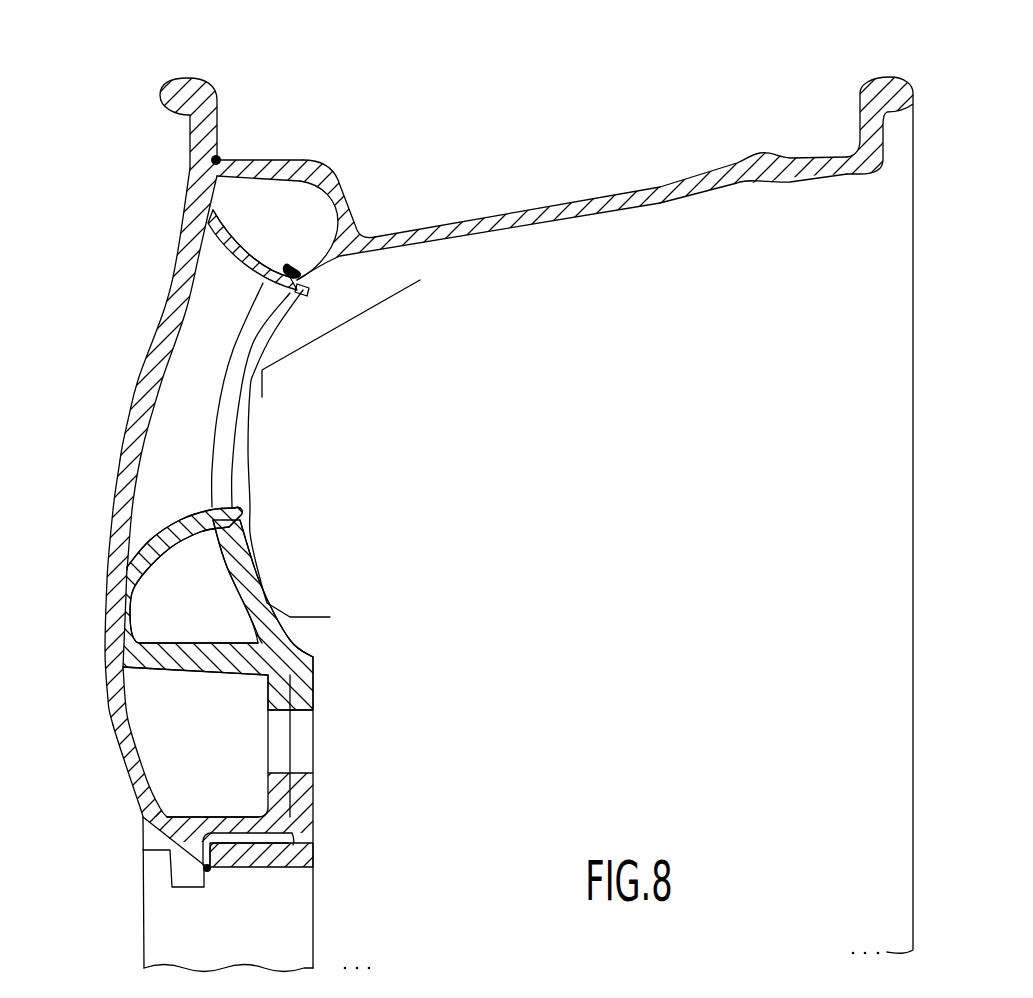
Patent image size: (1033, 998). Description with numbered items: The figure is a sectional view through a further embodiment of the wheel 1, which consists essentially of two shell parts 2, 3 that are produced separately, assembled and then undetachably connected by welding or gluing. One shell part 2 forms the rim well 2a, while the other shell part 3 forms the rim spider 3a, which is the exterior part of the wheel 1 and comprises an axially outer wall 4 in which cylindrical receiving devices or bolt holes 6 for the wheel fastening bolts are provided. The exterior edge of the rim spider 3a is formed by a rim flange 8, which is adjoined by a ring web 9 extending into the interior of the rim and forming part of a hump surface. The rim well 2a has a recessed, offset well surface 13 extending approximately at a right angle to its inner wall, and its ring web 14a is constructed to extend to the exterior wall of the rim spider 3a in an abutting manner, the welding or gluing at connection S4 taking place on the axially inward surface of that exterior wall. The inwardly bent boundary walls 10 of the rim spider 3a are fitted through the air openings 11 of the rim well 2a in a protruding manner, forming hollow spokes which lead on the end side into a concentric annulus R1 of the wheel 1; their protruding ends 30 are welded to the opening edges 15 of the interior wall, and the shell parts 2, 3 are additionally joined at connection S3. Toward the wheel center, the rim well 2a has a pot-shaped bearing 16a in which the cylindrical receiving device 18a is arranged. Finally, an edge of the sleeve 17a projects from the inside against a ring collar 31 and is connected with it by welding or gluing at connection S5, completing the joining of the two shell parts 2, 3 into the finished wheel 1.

The wheel 1 is at (567, 102).
The shell part 2 is at (458, 223).
The rim well 2a is at (630, 185).
The shell part 3 is at (105, 526).
The rim spider 3a is at (130, 423).
The axially outer wall 4 is at (142, 790).
The cylindrical receiving device 6 is at (157, 698).
The rim flange 8 is at (173, 90).
The ring web 9 is at (256, 153).
The boundary wall 10 is at (247, 260).
The air opening 11 is at (228, 440).
The well surface 13 is at (557, 183).
The ring web 14a is at (278, 163).
The opening edge 15 is at (298, 267).
The pot-shaped bearing 16a is at (258, 838).
The sleeve 17a is at (258, 857).
The cylindrical receiving device 18a is at (222, 820).
The protruding end 30 is at (299, 289).
The ring collar 31 is at (180, 887).
The concentric annulus R1 is at (253, 203).
The connection S3 is at (300, 279).
The connection S4 is at (218, 156).
The connection S5 is at (209, 869).